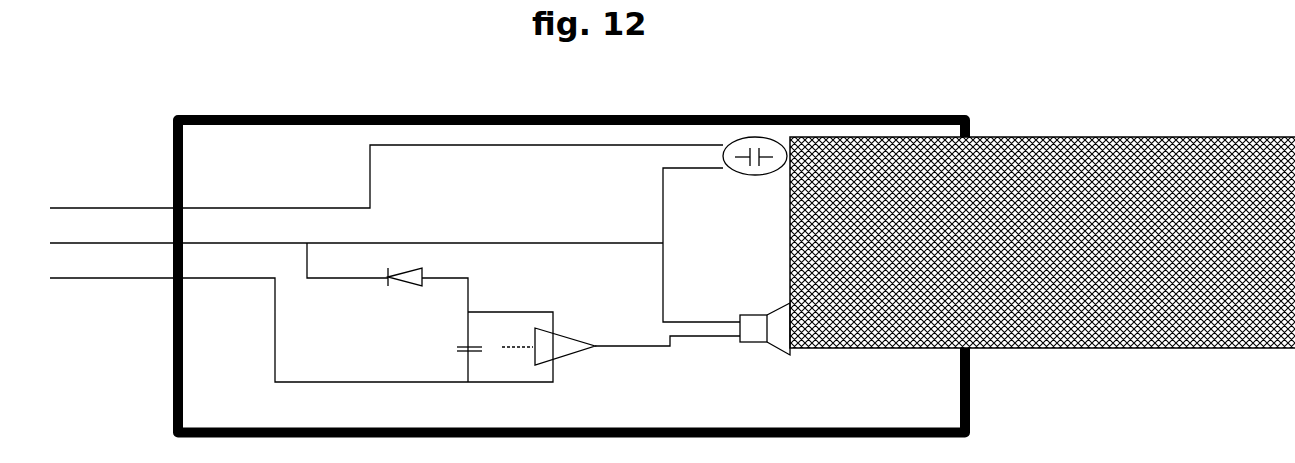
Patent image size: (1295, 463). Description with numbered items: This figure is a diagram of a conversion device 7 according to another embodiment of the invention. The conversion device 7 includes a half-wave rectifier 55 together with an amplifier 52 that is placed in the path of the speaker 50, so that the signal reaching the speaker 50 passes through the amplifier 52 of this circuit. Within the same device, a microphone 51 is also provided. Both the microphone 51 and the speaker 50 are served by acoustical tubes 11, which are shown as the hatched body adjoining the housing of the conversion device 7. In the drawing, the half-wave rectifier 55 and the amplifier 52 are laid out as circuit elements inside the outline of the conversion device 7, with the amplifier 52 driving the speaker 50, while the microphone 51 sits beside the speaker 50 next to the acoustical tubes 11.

The conversion device 7 is at (570, 106).
The acoustical tubes 11 is at (1167, 358).
The speaker 50 is at (748, 296).
The microphone 51 is at (748, 190).
The amplifier 52 is at (613, 368).
The half-wave rectifier 55 is at (385, 342).